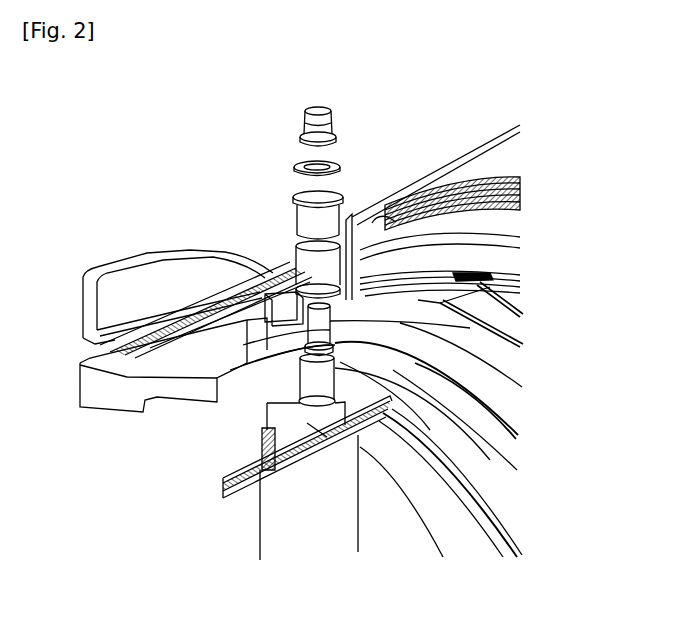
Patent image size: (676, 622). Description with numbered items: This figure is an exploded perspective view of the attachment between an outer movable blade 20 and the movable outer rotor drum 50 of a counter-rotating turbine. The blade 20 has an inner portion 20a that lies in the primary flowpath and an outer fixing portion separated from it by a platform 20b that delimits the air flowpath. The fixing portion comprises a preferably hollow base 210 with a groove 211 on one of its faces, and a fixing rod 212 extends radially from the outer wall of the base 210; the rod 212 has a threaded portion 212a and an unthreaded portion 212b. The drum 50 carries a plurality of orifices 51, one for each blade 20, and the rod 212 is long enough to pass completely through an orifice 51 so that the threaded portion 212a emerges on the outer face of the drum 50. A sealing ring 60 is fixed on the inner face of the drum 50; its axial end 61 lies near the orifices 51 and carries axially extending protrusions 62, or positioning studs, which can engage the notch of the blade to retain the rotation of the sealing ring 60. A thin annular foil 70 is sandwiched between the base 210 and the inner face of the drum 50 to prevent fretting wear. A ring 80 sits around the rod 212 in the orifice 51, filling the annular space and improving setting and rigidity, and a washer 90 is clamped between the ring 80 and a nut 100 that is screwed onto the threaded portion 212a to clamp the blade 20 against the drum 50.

The outer movable blade 20 is at (333, 507).
The inner portion 20a is at (310, 542).
The platform 20b is at (230, 497).
The movable outer rotor drum 50 is at (470, 328).
The orifice 51 is at (300, 262).
The sealing ring 60 is at (78, 363).
The axial end 61 is at (246, 356).
The protrusion 62 is at (247, 287).
The foil 70 is at (521, 292).
The ring 80 is at (304, 216).
The washer 90 is at (341, 171).
The nut 100 is at (337, 118).
The base 210 is at (370, 453).
The groove 211 is at (257, 402).
The fixing rod 212 is at (205, 300).
The threaded portion 212a is at (240, 295).
The unthreaded portion 212b is at (495, 412).